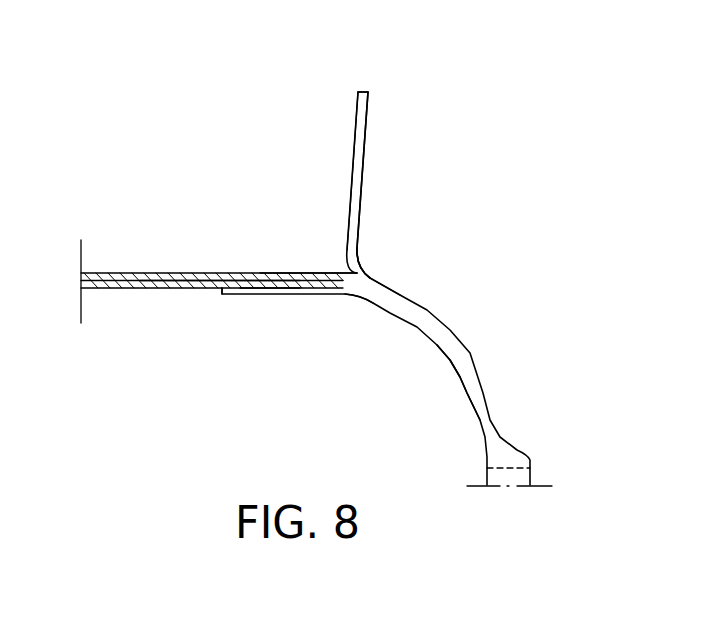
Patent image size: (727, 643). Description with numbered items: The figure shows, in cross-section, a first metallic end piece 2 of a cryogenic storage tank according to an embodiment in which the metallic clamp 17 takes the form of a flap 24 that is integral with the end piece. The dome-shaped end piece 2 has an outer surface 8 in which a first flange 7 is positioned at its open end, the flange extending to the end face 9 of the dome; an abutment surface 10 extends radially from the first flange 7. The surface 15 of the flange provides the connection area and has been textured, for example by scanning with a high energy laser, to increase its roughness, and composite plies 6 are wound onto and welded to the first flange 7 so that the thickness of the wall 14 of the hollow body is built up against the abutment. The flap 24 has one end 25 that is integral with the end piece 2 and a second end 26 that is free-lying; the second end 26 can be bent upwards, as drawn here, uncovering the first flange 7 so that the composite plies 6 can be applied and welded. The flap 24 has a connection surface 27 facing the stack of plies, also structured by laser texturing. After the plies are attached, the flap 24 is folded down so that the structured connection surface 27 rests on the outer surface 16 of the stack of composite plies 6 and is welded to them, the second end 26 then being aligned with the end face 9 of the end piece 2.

The first metallic end piece 2 is at (446, 296).
The composite plies 6 is at (207, 270).
The first flange 7 is at (297, 296).
The outer surface 8 is at (461, 343).
The end face 9 is at (222, 296).
The abutment surface 10 is at (350, 278).
The wall 14 is at (157, 268).
The surface of the flange 15 is at (265, 288).
The outer surface of the stack of composite plies 16 is at (300, 266).
The metallic clamp 17 is at (381, 145).
The flap 24 is at (355, 228).
The one end of the flap 25 is at (372, 275).
The second end of the flap 26 is at (365, 90).
The connection surface 27 is at (342, 158).